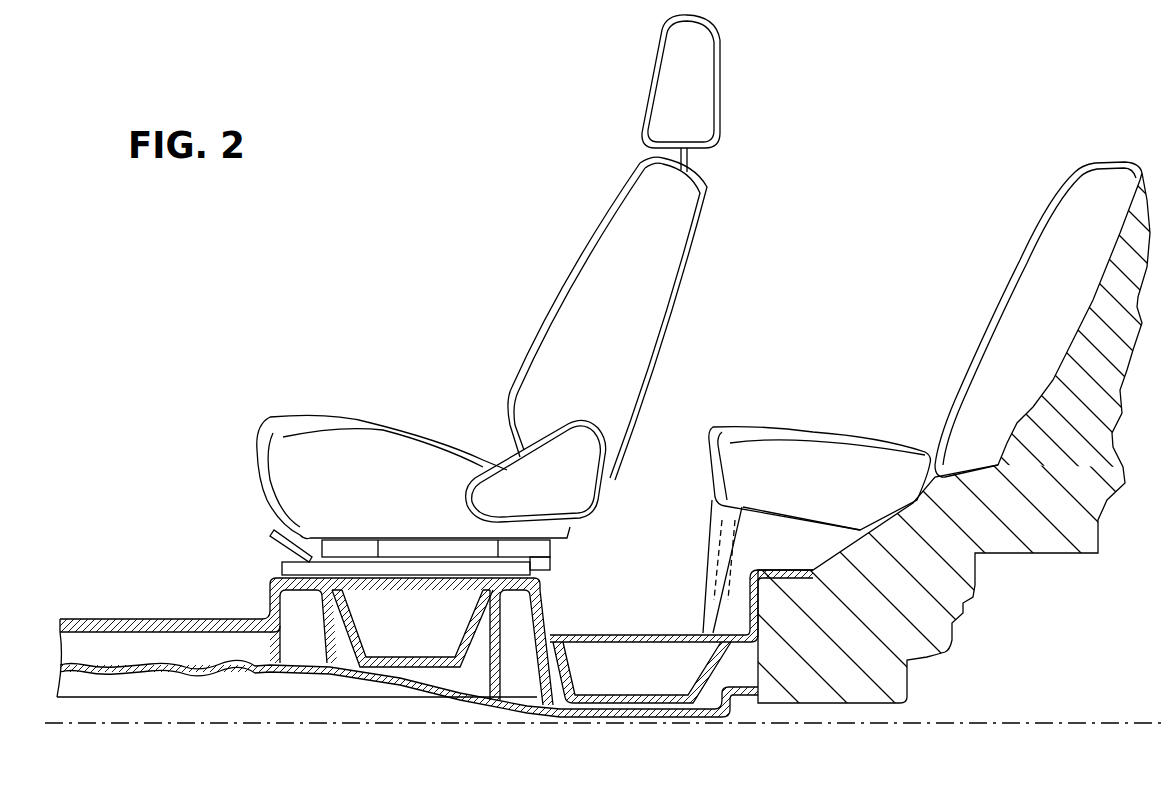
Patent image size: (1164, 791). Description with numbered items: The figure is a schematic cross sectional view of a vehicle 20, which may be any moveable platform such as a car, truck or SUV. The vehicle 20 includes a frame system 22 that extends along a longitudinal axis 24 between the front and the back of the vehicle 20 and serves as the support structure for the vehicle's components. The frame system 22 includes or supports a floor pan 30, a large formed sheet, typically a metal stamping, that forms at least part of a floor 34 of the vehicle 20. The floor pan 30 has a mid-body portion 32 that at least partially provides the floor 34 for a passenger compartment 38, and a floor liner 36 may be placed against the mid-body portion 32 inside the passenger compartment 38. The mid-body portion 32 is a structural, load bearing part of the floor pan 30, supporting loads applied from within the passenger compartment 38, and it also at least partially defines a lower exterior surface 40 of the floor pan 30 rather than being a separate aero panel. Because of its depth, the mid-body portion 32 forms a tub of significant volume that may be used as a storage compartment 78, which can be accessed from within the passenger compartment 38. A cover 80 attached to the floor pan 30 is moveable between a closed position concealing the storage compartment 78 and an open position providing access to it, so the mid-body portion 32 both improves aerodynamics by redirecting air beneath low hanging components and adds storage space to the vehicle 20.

The vehicle 20 is at (912, 113).
The frame system 22 is at (925, 656).
The longitudinal axis 24 is at (1027, 725).
The floor pan 30 is at (435, 666).
The mid-body portion 32 is at (370, 675).
The floor 34 is at (550, 610).
The floor liner 36 is at (165, 618).
The passenger compartment 38 is at (720, 329).
The lower exterior surface 40 is at (468, 700).
The storage compartment 78 is at (640, 670).
The cover 80 is at (630, 633).